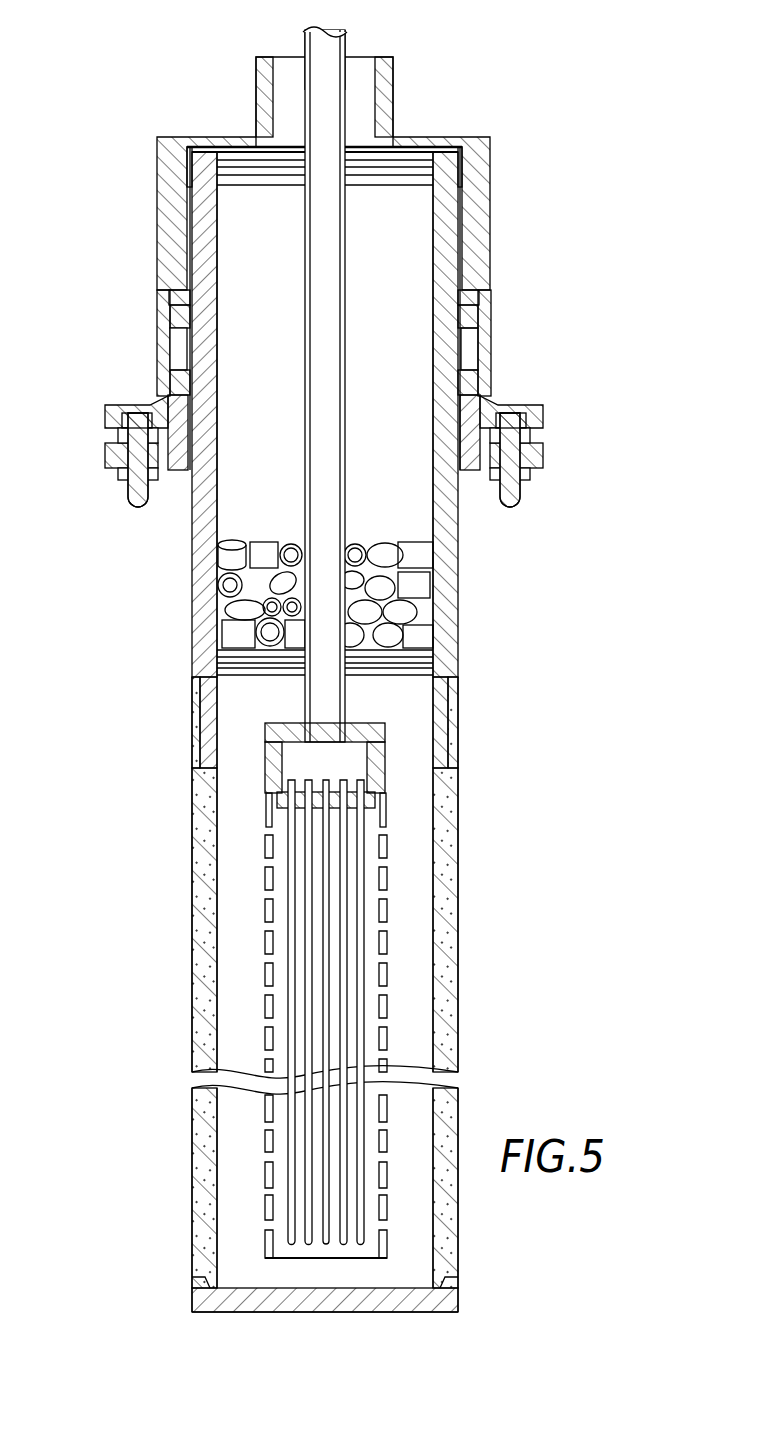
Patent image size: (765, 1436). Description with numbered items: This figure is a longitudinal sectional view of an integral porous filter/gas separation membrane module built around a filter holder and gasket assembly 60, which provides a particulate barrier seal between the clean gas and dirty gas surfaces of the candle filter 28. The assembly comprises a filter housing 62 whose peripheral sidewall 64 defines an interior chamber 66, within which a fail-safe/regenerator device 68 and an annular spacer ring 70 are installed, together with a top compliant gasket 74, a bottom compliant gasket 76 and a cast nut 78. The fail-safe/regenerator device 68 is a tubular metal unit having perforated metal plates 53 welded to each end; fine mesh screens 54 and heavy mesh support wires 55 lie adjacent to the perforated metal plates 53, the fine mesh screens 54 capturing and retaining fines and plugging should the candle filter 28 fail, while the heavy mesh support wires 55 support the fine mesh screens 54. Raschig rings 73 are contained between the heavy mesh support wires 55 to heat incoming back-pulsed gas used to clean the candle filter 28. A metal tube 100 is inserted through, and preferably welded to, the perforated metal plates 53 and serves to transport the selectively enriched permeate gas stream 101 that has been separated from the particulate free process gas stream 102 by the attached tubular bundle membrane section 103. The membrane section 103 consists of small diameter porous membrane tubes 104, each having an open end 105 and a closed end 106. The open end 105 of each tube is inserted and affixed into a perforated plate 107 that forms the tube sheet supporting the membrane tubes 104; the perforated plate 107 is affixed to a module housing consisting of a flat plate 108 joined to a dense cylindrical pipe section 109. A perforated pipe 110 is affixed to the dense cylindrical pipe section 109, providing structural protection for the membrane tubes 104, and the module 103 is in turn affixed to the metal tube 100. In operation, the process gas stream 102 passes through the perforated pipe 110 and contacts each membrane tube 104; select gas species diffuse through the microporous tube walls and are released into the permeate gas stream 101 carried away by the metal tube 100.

The permeate gas stream 101 is at (328, 35).
The metal tube 100 is at (345, 210).
The interior chamber 66 is at (464, 176).
The filter housing 62 is at (490, 215).
The peripheral sidewall 64 is at (192, 210).
The fail-safe/regenerator device 68 is at (205, 285).
The annular spacer ring 70 is at (170, 298).
The top compliant gasket 74 is at (478, 300).
The bottom compliant gasket 76 is at (478, 385).
The cast nut 78 is at (168, 470).
The filter holder and gasket assembly 60 is at (88, 438).
The raschig rings 73 is at (375, 548).
The heavy mesh support wires 55 is at (217, 650).
The fine mesh screens 54 is at (217, 660).
The perforated metal plates 53 is at (217, 672).
The tubular bundle membrane section 103 is at (215, 780).
The particulate free process gas stream 102 is at (458, 808).
The candle filter 28 is at (192, 875).
The flat plate 108 is at (360, 735).
The perforated plate 107 is at (298, 790).
The dense cylindrical pipe section 109 is at (385, 762).
The open end 105 is at (348, 780).
The perforated pipe 110 is at (388, 942).
The porous membrane tubes 104 is at (365, 1140).
The closed end 106 is at (375, 1260).